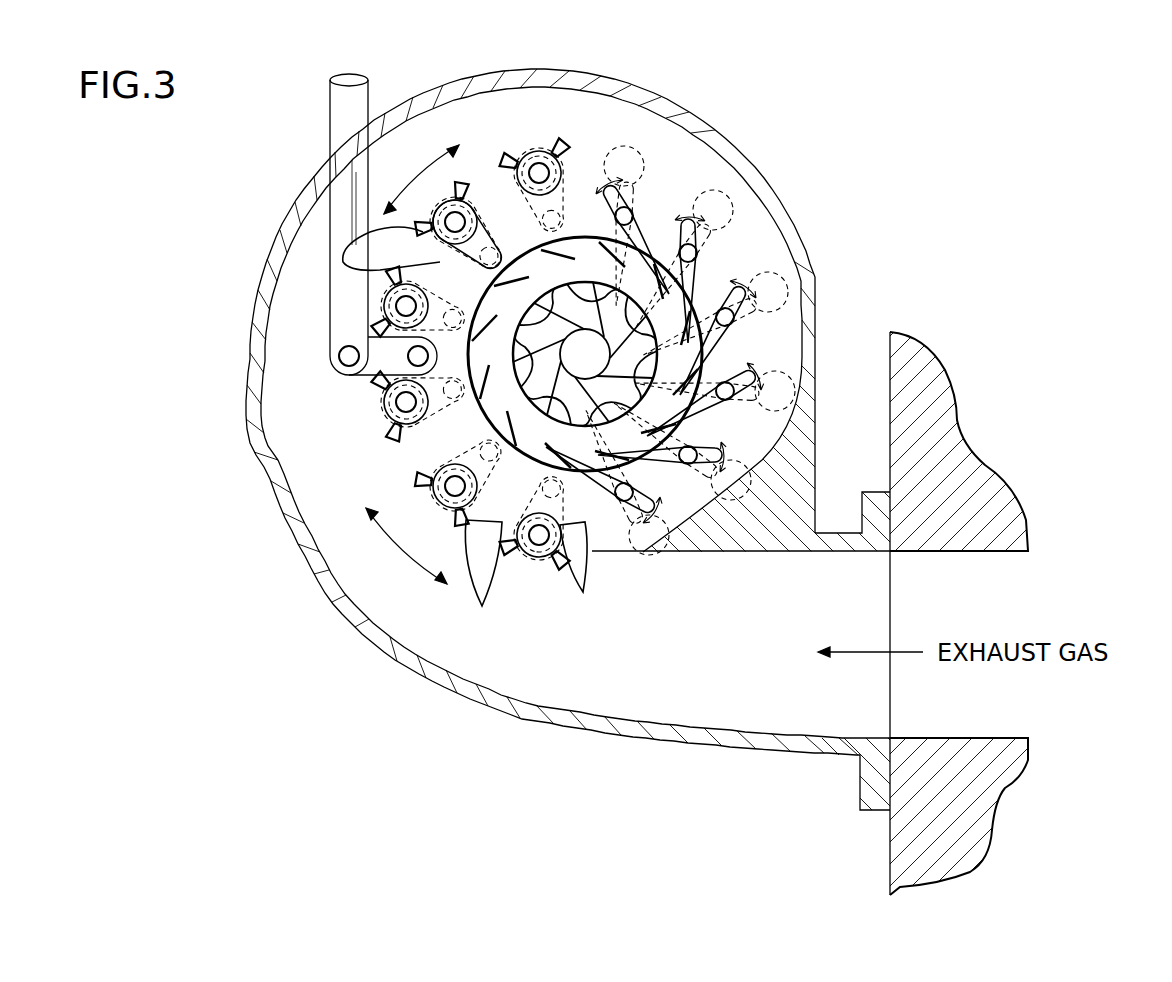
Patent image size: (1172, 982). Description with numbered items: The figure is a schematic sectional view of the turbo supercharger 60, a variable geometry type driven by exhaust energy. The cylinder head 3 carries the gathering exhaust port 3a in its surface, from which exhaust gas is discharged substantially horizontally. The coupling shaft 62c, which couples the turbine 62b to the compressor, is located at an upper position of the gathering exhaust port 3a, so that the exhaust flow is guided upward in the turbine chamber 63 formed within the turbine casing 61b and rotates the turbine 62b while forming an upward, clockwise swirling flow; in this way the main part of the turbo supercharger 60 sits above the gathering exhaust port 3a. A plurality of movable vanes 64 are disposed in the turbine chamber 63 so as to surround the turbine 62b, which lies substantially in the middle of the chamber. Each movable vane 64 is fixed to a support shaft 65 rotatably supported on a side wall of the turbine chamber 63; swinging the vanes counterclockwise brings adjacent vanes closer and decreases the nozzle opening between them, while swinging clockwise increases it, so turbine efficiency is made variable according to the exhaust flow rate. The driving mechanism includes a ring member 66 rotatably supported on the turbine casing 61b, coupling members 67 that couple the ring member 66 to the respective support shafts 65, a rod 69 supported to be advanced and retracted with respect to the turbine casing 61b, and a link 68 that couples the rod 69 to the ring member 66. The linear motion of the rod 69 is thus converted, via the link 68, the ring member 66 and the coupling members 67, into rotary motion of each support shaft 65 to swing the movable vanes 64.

The cylinder head 3 is at (890, 850).
The gathering exhaust port 3a is at (890, 712).
The turbo supercharger 60 is at (240, 238).
The turbine casing 61b is at (337, 604).
The turbine 62b is at (443, 450).
The coupling shaft 62c is at (700, 457).
The turbine chamber 63 is at (665, 693).
The movable vanes 64 is at (662, 212).
The support shaft 65 is at (598, 188).
The ring member 66 is at (583, 528).
The coupling members 67 is at (445, 255).
The link 68 is at (385, 340).
The rod 69 is at (342, 112).